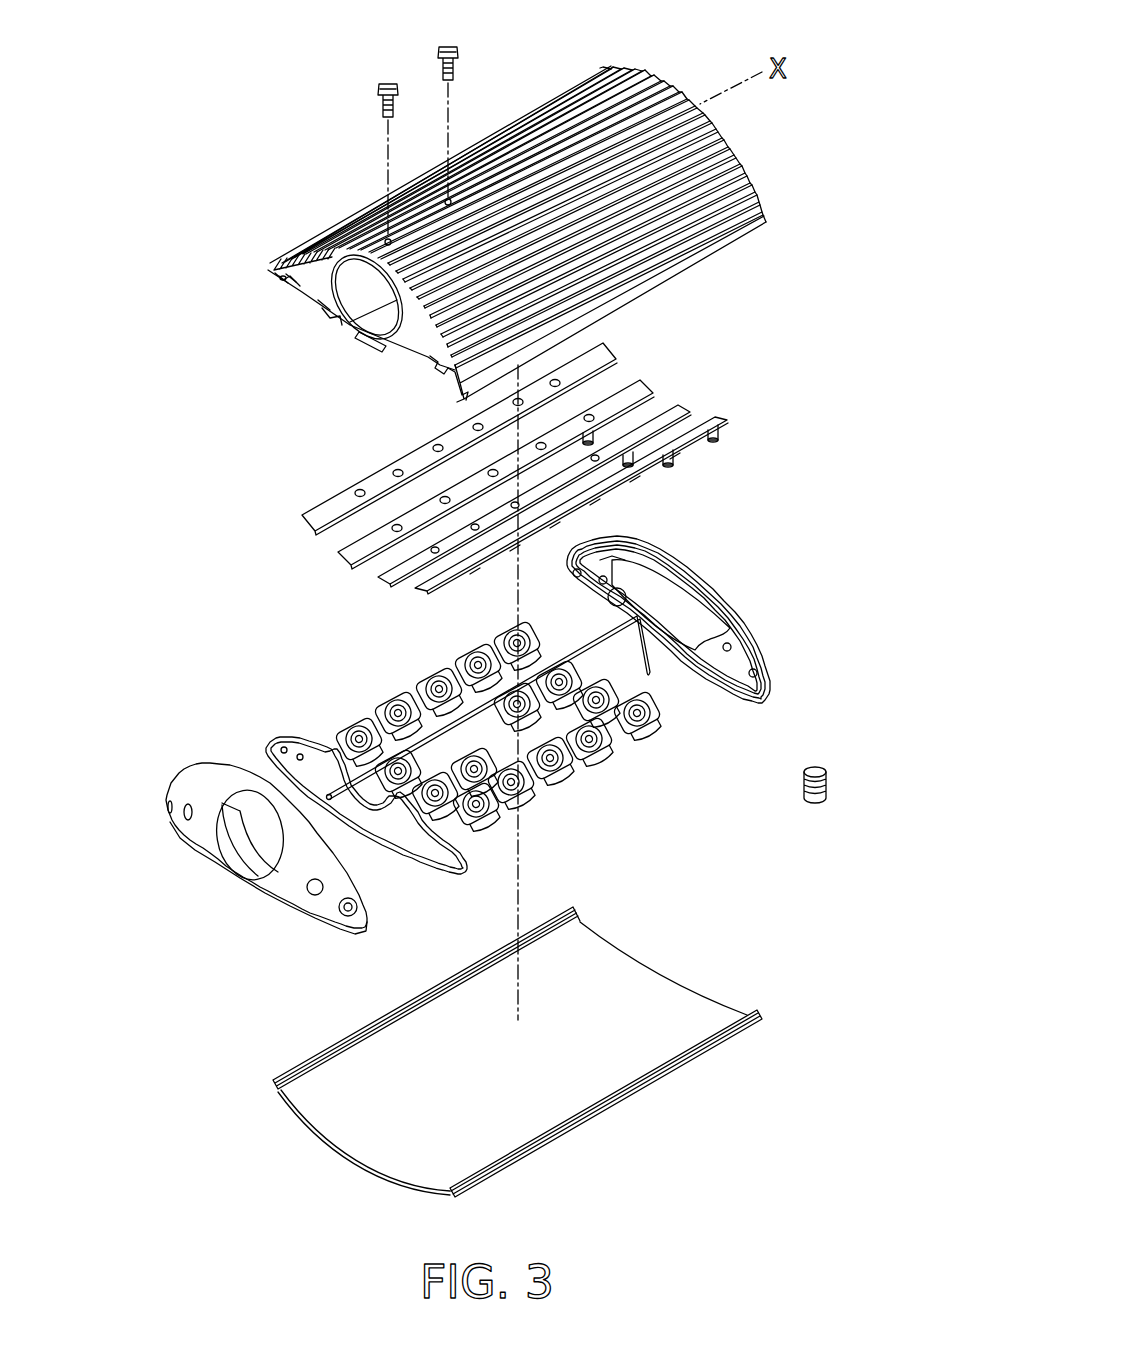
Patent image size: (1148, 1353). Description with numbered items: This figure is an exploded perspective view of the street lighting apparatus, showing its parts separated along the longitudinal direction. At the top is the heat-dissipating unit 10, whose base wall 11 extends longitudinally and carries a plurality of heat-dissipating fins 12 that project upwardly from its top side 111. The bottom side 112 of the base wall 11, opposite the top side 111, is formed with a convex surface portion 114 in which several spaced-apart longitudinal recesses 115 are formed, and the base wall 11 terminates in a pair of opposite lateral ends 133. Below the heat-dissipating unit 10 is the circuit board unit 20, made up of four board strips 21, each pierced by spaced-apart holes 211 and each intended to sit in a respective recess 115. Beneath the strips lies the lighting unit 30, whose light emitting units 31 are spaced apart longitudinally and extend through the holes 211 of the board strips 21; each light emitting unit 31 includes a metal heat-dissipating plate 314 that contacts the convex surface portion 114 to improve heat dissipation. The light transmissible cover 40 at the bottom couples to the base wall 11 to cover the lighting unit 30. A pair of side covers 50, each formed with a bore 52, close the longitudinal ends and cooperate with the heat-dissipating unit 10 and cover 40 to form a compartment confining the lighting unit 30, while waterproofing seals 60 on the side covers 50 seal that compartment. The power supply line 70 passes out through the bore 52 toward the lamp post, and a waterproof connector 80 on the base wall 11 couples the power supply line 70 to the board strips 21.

The heat-dissipating unit 10 is at (505, 112).
The base wall 11 is at (285, 272).
The heat-dissipating fins 12 is at (717, 122).
The top side 111 is at (355, 318).
The bottom side 112 is at (450, 385).
The convex surface portion 114 is at (315, 315).
The recesses 115 is at (400, 362).
The lateral ends 133 is at (320, 290).
The circuit board unit 20 is at (668, 376).
The board strips 21 is at (688, 396).
The holes 211 is at (358, 492).
The lighting unit 30 is at (361, 700).
The light emitting units 31 is at (428, 690).
The metal heat-dissipating plate 314 is at (355, 735).
The light transmissible cover 40 is at (291, 1122).
The side covers 50 is at (768, 634).
The bore 52 is at (236, 866).
The waterproofing seals 60 is at (265, 742).
The power supply line 70 is at (561, 652).
The waterproof connector 80 is at (814, 768).